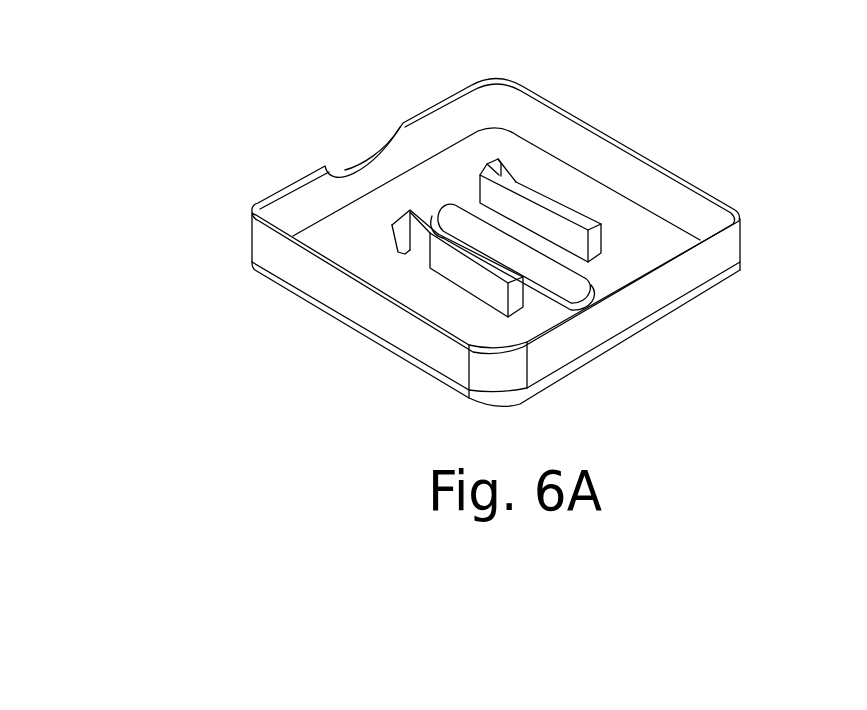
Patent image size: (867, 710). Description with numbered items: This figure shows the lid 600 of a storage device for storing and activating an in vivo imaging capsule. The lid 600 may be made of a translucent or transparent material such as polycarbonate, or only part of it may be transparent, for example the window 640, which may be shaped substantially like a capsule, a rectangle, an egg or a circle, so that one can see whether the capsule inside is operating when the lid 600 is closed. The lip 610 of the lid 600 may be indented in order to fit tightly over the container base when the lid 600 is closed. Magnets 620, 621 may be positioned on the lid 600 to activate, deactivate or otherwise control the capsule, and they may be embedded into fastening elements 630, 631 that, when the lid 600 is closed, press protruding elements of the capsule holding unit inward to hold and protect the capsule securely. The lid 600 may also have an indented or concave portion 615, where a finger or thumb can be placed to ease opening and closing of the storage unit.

The lid 600 is at (177, 167).
The lip 610 is at (600, 341).
The indented or concave portion 615 is at (373, 155).
The magnet 620 is at (567, 213).
The magnet 621 is at (467, 273).
The fastening element 630 is at (496, 168).
The fastening element 631 is at (422, 240).
The window 640 is at (567, 268).